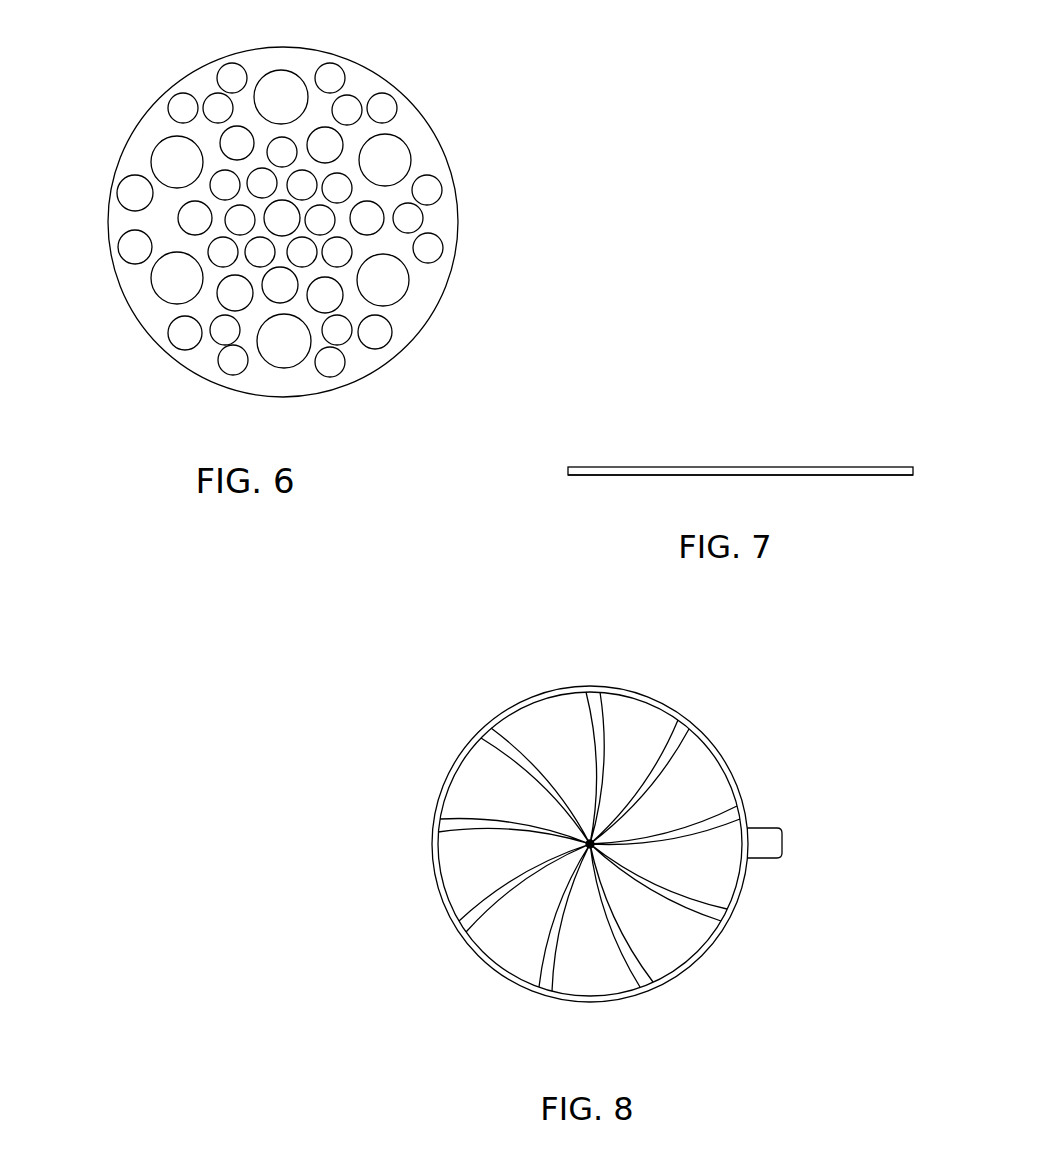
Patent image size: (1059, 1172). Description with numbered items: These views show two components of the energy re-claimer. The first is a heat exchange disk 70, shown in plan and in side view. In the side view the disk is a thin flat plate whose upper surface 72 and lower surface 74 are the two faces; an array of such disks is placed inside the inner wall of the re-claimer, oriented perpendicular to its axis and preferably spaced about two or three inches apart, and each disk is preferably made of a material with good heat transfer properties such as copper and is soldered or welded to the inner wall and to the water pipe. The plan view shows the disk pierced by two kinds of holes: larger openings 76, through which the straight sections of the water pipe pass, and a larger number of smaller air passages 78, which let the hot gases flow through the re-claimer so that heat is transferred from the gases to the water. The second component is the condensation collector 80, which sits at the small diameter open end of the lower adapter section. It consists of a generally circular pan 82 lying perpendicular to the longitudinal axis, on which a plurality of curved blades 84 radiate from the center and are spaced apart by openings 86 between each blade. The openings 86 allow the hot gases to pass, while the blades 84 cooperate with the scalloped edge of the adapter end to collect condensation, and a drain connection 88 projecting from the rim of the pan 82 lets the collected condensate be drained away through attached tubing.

In FIG. 6, the heat exchange disk 70 is at (75, 84).
In FIG. 7, the heat exchange disk 70 is at (528, 533).
In FIG. 6, the upper surface 72 is at (410, 120).
In FIG. 7, the upper surface 72 is at (652, 467).
In FIG. 7, the lower surface 74 is at (833, 476).
In FIG. 6, the openings 76 is at (287, 90).
In FIG. 6, the air passages 78 is at (213, 105).
In FIG. 8, the condensation collector 80 is at (330, 792).
In FIG. 8, the pan 82 is at (720, 747).
In FIG. 8, the blades 84 is at (538, 717).
In FIG. 8, the openings 86 is at (582, 700).
In FIG. 8, the drain connection 88 is at (784, 847).